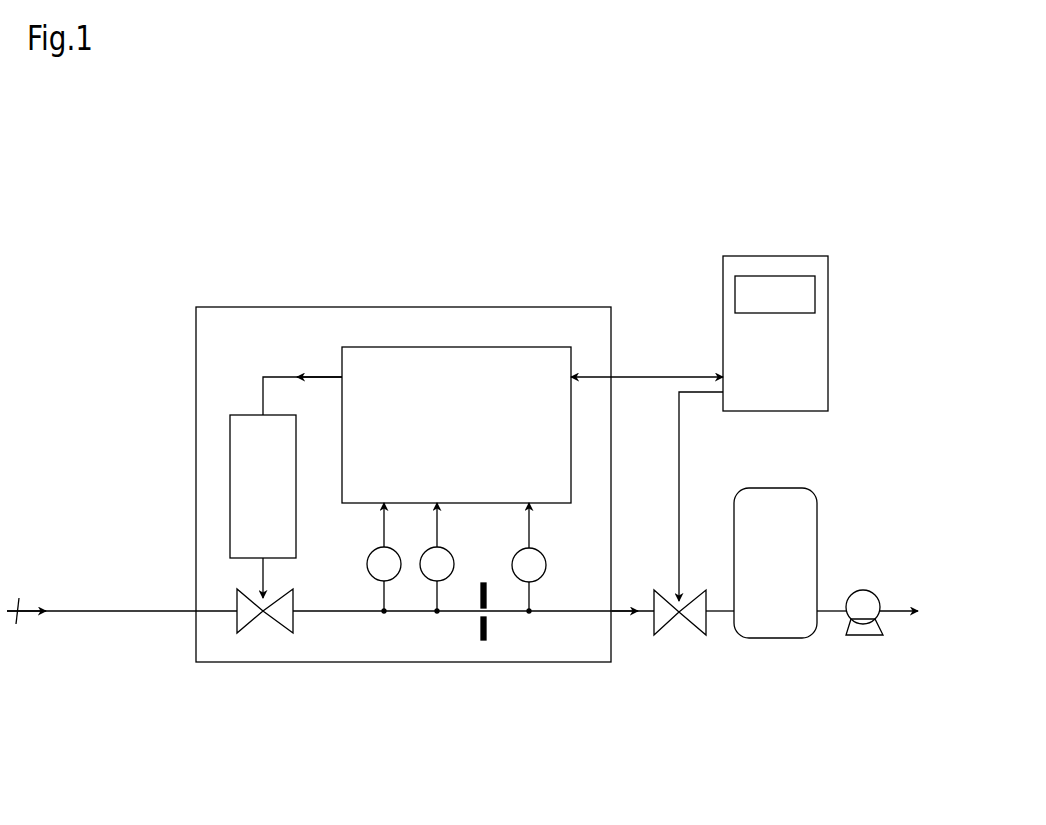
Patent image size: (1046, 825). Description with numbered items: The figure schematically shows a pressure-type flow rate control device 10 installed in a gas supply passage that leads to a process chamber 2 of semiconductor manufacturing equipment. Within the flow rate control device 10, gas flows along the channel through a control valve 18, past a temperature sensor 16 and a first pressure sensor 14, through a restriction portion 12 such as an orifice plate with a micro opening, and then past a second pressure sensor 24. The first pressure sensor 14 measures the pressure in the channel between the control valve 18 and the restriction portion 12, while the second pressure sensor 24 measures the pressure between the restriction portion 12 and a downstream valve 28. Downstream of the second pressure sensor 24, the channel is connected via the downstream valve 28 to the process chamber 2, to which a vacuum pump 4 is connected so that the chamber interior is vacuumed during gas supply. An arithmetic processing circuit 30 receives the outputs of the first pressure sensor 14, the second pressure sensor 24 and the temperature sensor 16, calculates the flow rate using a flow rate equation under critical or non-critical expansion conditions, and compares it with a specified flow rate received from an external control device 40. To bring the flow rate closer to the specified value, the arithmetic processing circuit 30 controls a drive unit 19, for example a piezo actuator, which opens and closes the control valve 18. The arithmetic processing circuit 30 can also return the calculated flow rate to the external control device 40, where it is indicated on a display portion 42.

The process chamber 2 is at (778, 617).
The vacuum pump 4 is at (860, 636).
The pressure-type flow rate control device 10 is at (532, 307).
The restriction portion 12 is at (483, 641).
The first pressure sensor 14 is at (433, 583).
The temperature sensor 16 is at (372, 576).
The control valve 18 is at (258, 618).
The drive unit 19 is at (230, 455).
The second pressure sensor 24 is at (543, 578).
The downstream valve 28 is at (686, 623).
The arithmetic processing circuit 30 is at (428, 347).
The external control device 40 is at (770, 256).
The display portion 42 is at (815, 295).